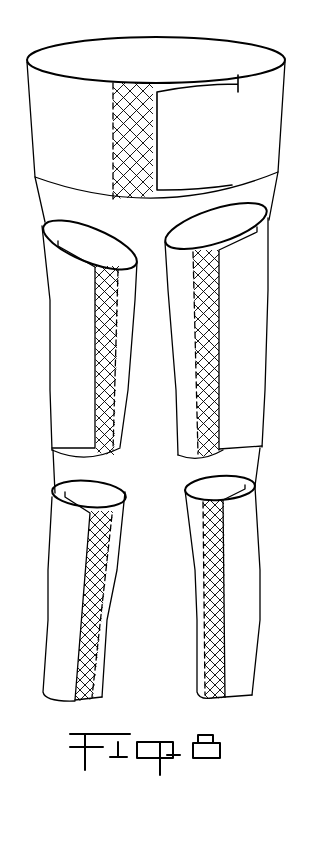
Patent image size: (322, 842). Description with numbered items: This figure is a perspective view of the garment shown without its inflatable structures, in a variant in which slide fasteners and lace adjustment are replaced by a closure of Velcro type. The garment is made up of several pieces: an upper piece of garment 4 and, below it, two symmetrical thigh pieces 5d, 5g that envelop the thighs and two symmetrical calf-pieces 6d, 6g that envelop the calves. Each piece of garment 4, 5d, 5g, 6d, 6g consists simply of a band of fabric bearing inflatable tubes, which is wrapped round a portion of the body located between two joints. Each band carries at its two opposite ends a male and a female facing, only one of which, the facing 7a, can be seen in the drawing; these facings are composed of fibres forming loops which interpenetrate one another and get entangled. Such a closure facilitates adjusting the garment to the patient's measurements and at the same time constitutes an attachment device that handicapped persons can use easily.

The piece of garment 4 is at (223, 148).
The thigh piece 5d is at (78, 341).
The thigh piece 5g is at (250, 335).
The calf-piece 6d is at (78, 575).
The calf-piece 6g is at (250, 583).
The Velcro-type facing 7a is at (128, 110).